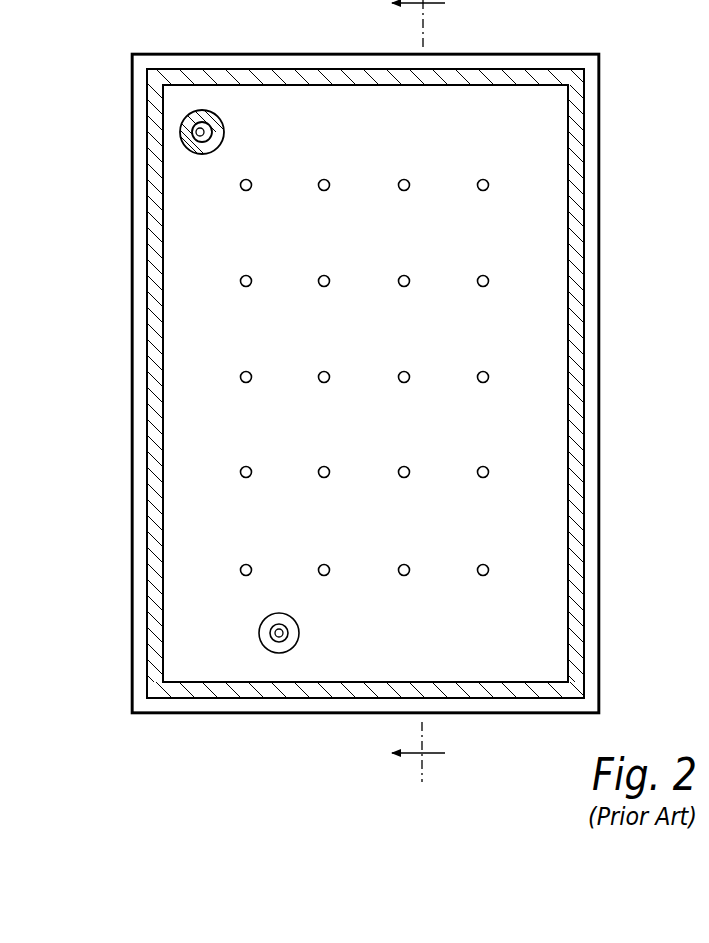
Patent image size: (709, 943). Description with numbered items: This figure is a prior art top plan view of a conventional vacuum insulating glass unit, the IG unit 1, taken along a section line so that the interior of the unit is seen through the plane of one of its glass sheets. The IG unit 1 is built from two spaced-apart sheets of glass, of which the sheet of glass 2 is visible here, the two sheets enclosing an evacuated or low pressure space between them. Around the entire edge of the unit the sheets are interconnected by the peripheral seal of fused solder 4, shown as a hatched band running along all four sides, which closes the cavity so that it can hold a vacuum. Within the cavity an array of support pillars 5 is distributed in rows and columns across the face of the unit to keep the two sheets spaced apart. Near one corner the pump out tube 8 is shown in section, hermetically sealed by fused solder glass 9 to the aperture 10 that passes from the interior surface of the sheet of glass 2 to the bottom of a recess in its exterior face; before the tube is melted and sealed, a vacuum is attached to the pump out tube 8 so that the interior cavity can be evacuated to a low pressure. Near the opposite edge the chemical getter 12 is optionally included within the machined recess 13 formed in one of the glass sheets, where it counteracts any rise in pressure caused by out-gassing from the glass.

The IG unit 1 is at (112, 580).
The sheet of glass 2 is at (331, 62).
The peripheral seal of fused solder 4 is at (236, 78).
The support pillars 5 is at (490, 279).
The pump out tube 8 is at (194, 126).
The fused solder glass 9 is at (204, 155).
The aperture 10 is at (187, 147).
The chemical getter 12 is at (268, 640).
The machined recess 13 is at (293, 631).